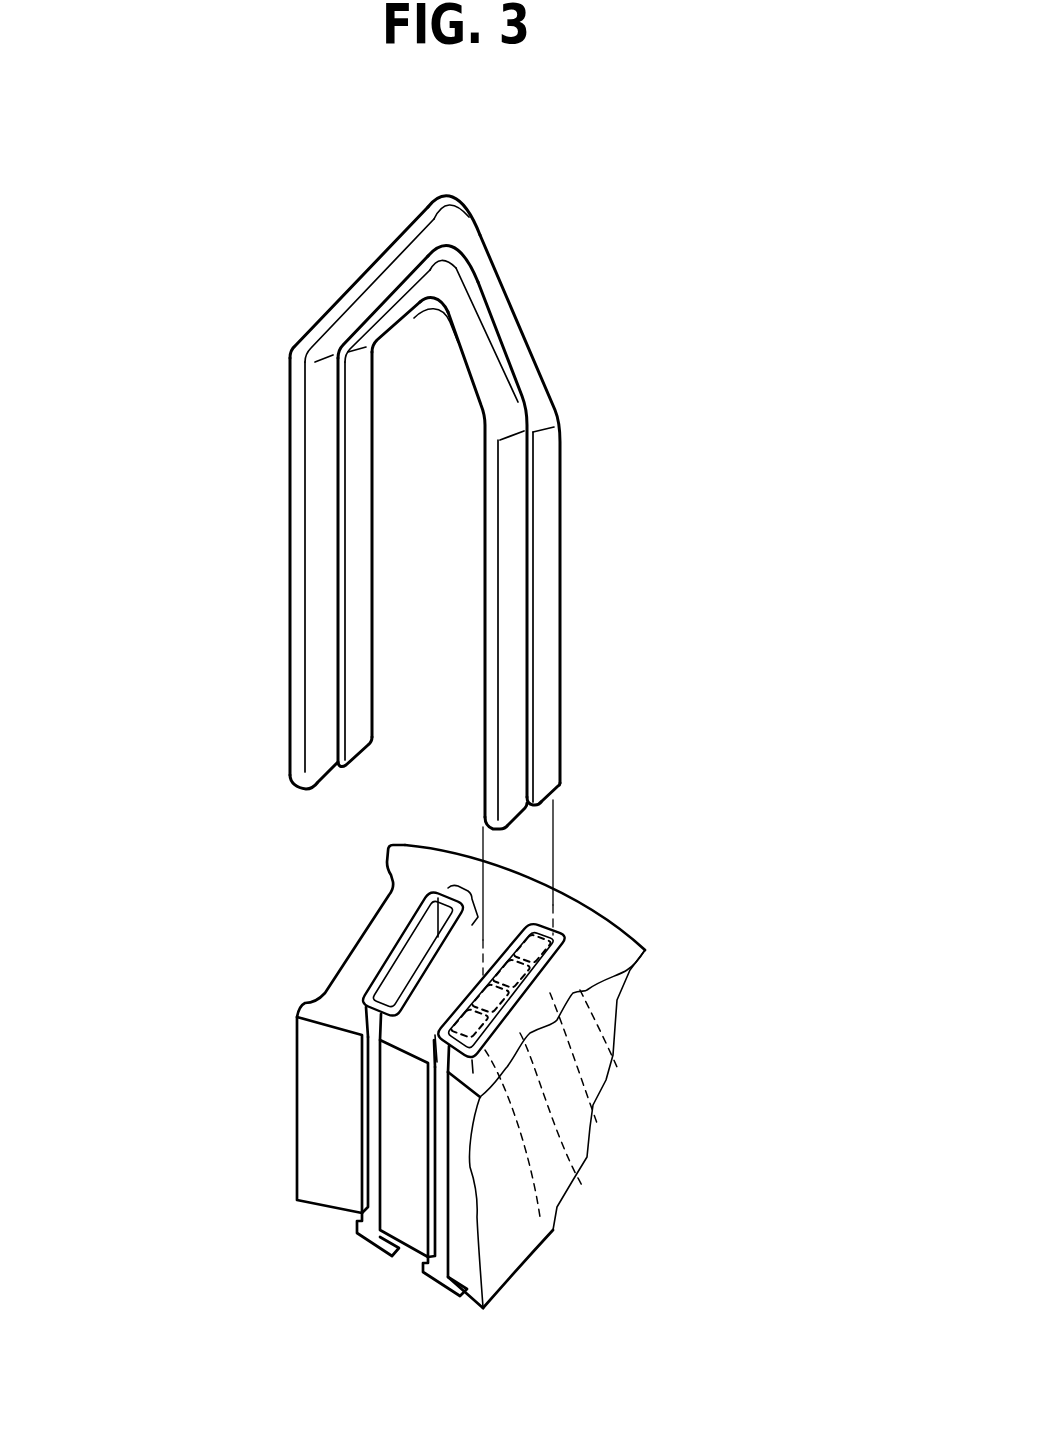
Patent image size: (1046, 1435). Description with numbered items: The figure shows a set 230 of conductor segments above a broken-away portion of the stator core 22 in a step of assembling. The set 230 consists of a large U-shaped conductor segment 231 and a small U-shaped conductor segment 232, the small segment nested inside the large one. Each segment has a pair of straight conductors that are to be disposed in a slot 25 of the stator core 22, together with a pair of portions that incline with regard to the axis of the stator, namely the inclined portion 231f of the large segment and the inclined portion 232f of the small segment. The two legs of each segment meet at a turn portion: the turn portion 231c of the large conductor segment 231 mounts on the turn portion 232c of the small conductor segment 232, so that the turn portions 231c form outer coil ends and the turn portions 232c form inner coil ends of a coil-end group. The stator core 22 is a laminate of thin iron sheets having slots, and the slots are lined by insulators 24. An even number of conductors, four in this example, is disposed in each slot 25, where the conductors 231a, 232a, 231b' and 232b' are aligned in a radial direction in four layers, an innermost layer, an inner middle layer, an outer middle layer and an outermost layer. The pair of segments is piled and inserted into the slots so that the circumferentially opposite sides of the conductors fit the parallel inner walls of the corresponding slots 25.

The set of large and small U-shaped conductor segments 230 is at (597, 328).
The large conductor segment 231 is at (497, 303).
The small conductor segment 232 is at (513, 412).
The turn portion of large conductor segment 231c is at (448, 210).
The turn portion of small conductor segment 232c is at (440, 263).
The inclined portion of large conductor segment 231f is at (378, 285).
The inclined portion of small conductor segment 232f is at (378, 325).
The conductor of large conductor segment 231a is at (540, 1217).
The conductor of small conductor segment 232a is at (583, 1187).
The conductor of large conductor segment 231b' is at (696, 1047).
The conductor of small conductor segment 232b' is at (666, 1081).
The stator core 22 is at (615, 942).
The insulator 24 is at (558, 925).
The slot 25 is at (377, 1117).